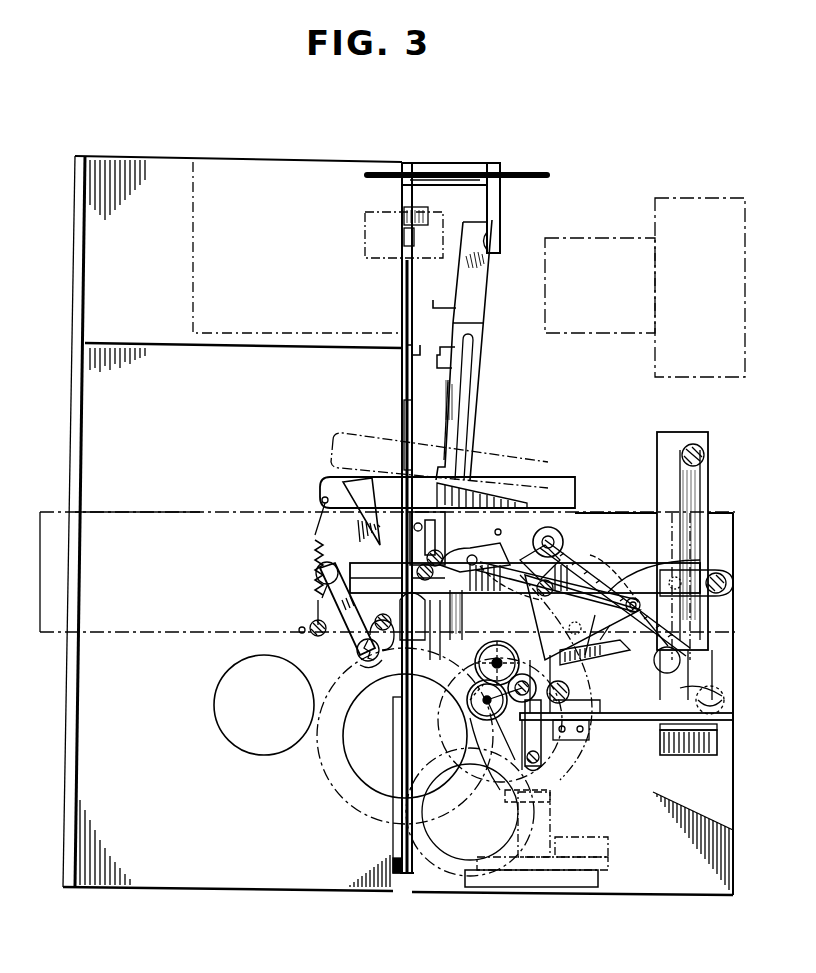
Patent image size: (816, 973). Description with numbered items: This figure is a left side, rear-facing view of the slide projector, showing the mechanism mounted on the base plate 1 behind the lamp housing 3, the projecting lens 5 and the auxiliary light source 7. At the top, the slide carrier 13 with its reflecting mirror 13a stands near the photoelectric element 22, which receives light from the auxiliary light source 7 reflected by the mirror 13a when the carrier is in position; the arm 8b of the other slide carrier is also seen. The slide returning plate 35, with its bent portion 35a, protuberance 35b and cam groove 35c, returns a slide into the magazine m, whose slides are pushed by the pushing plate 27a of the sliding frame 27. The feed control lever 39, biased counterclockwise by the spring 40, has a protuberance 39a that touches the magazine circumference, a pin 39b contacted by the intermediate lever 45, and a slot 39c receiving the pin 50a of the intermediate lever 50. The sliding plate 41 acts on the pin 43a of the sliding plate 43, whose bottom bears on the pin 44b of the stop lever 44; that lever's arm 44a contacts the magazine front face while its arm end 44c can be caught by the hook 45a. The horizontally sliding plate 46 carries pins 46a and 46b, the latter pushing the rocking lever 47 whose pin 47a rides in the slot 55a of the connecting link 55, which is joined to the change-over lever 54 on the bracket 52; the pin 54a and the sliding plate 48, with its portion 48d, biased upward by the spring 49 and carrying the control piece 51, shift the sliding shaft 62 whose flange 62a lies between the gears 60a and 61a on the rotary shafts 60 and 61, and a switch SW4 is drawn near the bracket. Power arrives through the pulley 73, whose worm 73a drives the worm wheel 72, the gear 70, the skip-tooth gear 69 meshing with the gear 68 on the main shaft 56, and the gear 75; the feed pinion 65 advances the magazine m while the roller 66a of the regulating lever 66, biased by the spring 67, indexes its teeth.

The base plate 1 is at (75, 156).
The lamp housing 3 is at (193, 222).
The projecting lens 5 is at (680, 198).
The auxiliary light source 7 is at (365, 238).
The slide carrier 13 is at (426, 218).
The reflecting mirror 13a is at (406, 240).
The photoelectric element 22 is at (480, 251).
The slide returning plate 35 is at (483, 311).
The bent portion 35a is at (438, 304).
The protuberance 35b is at (473, 352).
The cam groove 35c is at (470, 382).
The arm 8b is at (408, 360).
The sliding plate 41 is at (410, 456).
The feed control lever 39 is at (538, 477).
The protuberance 39a is at (376, 545).
The pin 39b is at (518, 478).
The slot 39c is at (602, 575).
The sliding plate 43 is at (442, 512).
The pin 43a is at (418, 545).
The intermediate lever 45 is at (492, 542).
The hook 45a is at (466, 605).
The spring 49 is at (563, 532).
The sliding plate 46 is at (652, 560).
The pin 46a is at (316, 597).
The pin 46b is at (727, 566).
The rocking lever 47 is at (704, 464).
The pin 47a is at (724, 698).
The spring 40 is at (314, 549).
The spring 67 is at (308, 625).
The regulating lever 66 is at (352, 648).
The roller 66a is at (363, 668).
The feed pinion 65 is at (374, 658).
The stop lever 44 is at (484, 620).
The arm 44a is at (412, 600).
The pin 44b is at (436, 660).
The arm end 44c is at (517, 568).
The sliding plate 48 is at (582, 617).
The lever arm 48d is at (591, 654).
The intermediate lever 50 is at (640, 608).
The pin 50a is at (634, 598).
The bracket 52 is at (581, 713).
The main shaft 56 is at (584, 701).
The connecting link 55 is at (650, 720).
The slot 55a is at (690, 698).
The change-over lever 54 is at (545, 734).
The pin 54a is at (538, 768).
The control piece 51 is at (542, 756).
The gear 68 is at (600, 758).
The switch SW4 is at (666, 748).
The rotary shaft 60 is at (476, 676).
The gear 60a is at (470, 696).
The rotary shaft 61 is at (470, 712).
The gear 61a is at (476, 748).
The sliding shaft 62 is at (538, 796).
The flange 62a is at (517, 773).
The pulley 73 is at (600, 874).
The worm 73a is at (510, 814).
The worm wheel 72 is at (428, 875).
The gear 75 is at (236, 748).
The gear 70 is at (344, 766).
The skip-tooth gear 69 is at (353, 796).
The sliding frame 27 is at (404, 886).
The pushing plate 27a is at (402, 737).
The magazine m is at (168, 512).